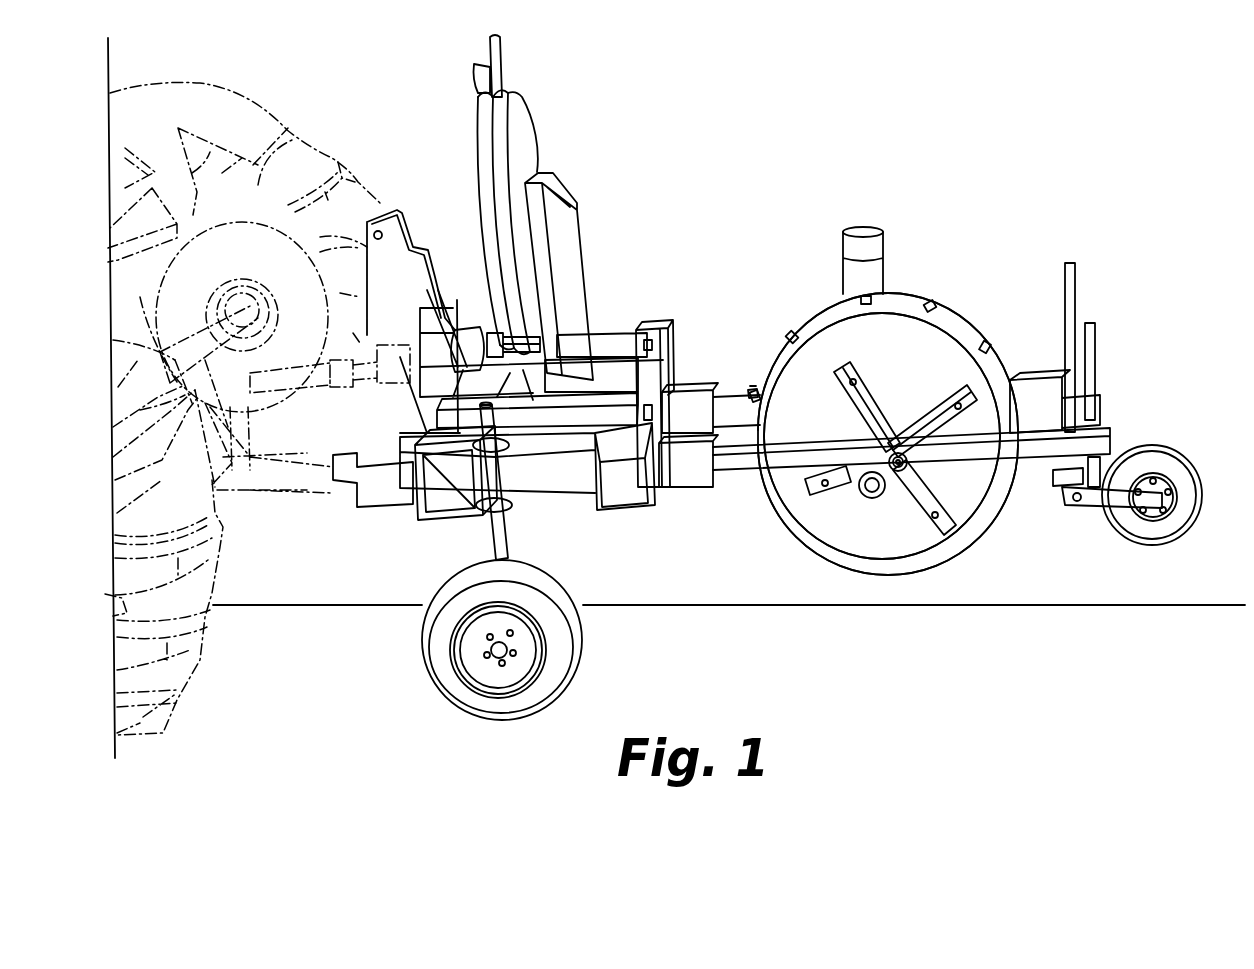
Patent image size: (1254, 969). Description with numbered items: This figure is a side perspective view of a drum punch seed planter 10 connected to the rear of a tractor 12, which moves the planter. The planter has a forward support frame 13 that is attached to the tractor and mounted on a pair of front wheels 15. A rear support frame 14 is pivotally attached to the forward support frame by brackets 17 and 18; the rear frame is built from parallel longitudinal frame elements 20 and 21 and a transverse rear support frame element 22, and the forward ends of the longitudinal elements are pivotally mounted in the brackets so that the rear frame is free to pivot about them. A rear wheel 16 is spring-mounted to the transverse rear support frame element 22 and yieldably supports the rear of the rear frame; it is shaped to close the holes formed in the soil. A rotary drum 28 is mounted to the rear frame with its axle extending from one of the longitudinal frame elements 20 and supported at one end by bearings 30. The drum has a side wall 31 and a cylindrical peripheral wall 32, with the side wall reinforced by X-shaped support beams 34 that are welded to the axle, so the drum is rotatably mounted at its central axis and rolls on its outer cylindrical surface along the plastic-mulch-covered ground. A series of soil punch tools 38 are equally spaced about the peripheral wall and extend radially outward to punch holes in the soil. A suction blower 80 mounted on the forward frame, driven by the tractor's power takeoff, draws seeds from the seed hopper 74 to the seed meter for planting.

The seed planter 10 is at (988, 277).
The tractor 12 is at (314, 98).
The forward support frame 13 is at (658, 330).
The rear support frame 14 is at (990, 452).
The front wheels 15 is at (410, 653).
The rear wheel 16 is at (1170, 453).
The bracket 17 is at (700, 405).
The bracket 18 is at (695, 472).
The longitudinal frame element 20 is at (802, 467).
The longitudinal frame element 21 is at (739, 398).
The transverse rear support frame element 22 is at (1098, 413).
The rotary drum 28 is at (905, 357).
The bearings 30 is at (898, 450).
The side wall 31 is at (978, 373).
The cylindrical peripheral wall 32 is at (905, 301).
The X-shaped support beams 34 is at (862, 402).
The soil punch tools 38 is at (793, 334).
The seed hopper 74 is at (858, 245).
The suction blower 80 is at (520, 122).